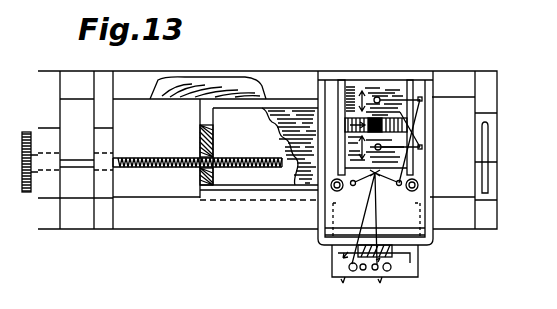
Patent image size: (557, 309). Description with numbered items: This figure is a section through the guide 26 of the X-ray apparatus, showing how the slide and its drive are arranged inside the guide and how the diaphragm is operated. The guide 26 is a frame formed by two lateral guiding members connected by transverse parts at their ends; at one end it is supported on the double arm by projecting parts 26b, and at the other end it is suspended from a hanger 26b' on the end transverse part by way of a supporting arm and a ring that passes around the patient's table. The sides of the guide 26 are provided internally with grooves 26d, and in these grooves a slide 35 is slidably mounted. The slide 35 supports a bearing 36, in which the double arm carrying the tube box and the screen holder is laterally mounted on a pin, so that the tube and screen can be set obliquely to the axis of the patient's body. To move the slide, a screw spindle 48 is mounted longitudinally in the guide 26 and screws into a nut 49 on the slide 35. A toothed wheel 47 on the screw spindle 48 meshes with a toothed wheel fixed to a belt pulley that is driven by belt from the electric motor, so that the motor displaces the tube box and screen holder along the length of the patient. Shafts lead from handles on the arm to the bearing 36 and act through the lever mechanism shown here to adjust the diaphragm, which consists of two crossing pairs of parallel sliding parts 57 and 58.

The guide 26 is at (152, 75).
The grooves 26d is at (203, 77).
The projecting parts 26b is at (75, 139).
The hanger 26b' is at (488, 150).
The toothed wheel 47 is at (27, 194).
The screw spindle 48 is at (170, 153).
The nut 49 is at (196, 171).
The slide 35 is at (252, 191).
The bearing 36 is at (352, 185).
The parallel sliding parts 57 is at (372, 93).
The parallel sliding parts 58 is at (354, 120).